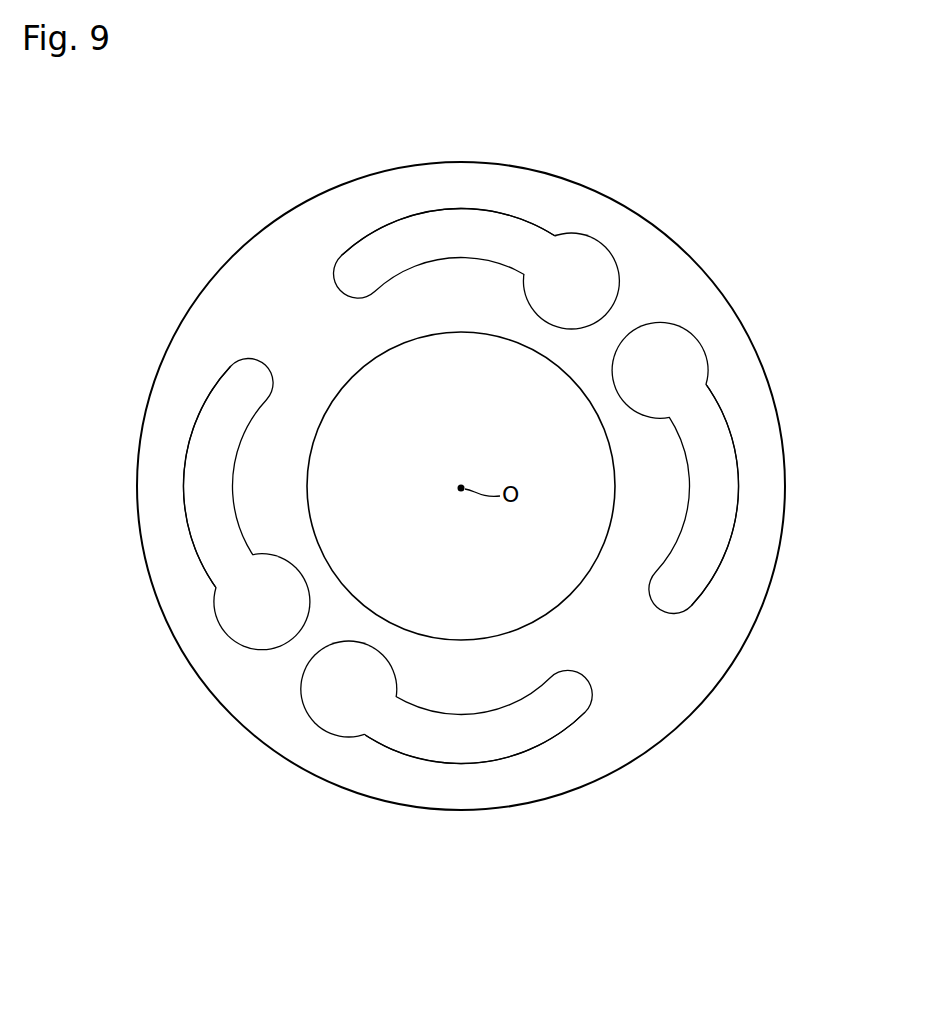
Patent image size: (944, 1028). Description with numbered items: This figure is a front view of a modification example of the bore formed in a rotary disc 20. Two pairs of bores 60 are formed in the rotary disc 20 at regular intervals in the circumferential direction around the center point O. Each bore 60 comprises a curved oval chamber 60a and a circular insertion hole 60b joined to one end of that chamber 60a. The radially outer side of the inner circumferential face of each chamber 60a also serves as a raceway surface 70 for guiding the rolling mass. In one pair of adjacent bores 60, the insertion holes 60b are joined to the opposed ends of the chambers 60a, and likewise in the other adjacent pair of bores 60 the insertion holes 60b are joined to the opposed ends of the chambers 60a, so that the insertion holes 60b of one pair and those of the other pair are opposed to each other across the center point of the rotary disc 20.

The rotary disc 20 is at (637, 150).
The bore 60 is at (441, 230).
The curved oval chamber 60a is at (405, 240).
The circular insertion hole 60b is at (598, 262).
The raceway surface 70 is at (463, 210).